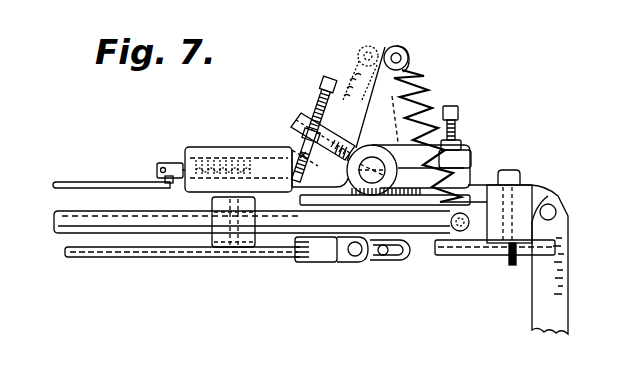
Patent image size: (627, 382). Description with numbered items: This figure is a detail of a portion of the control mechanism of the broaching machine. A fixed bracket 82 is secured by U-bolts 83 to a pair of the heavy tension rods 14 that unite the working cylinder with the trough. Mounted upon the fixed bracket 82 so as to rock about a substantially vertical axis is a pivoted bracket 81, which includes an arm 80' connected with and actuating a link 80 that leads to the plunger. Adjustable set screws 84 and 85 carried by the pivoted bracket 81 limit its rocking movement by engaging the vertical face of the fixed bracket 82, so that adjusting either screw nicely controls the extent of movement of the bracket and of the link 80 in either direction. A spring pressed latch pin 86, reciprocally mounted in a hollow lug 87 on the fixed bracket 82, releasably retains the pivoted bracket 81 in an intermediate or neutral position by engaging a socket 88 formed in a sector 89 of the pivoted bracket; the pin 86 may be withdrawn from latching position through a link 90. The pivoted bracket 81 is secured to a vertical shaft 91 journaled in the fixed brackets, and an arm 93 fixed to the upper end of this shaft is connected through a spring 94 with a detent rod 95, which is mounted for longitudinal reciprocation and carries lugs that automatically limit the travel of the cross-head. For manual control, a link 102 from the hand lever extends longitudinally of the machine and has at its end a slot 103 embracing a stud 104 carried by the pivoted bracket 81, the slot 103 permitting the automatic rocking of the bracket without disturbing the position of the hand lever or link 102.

The tension rods 14 is at (470, 257).
The link 80 is at (570, 265).
The arm 80' is at (504, 186).
The pivoted bracket 81 is at (407, 170).
The fixed bracket 82 is at (423, 200).
The U-bolts 83 is at (213, 250).
The adjustable set screw 84 is at (311, 95).
The adjustable set screw 85 is at (469, 127).
The spring pressed latch pin 86 is at (269, 164).
The hollow lug 87 is at (216, 149).
The socket 88 is at (308, 160).
The sector 89 is at (332, 133).
The link 90 is at (87, 178).
The vertical shaft 91 is at (371, 157).
The arm 93 is at (386, 52).
The spring 94 is at (428, 92).
The detent rod 95 is at (137, 217).
The link 102 is at (92, 259).
The slot 103 is at (383, 262).
The stud 104 is at (352, 257).